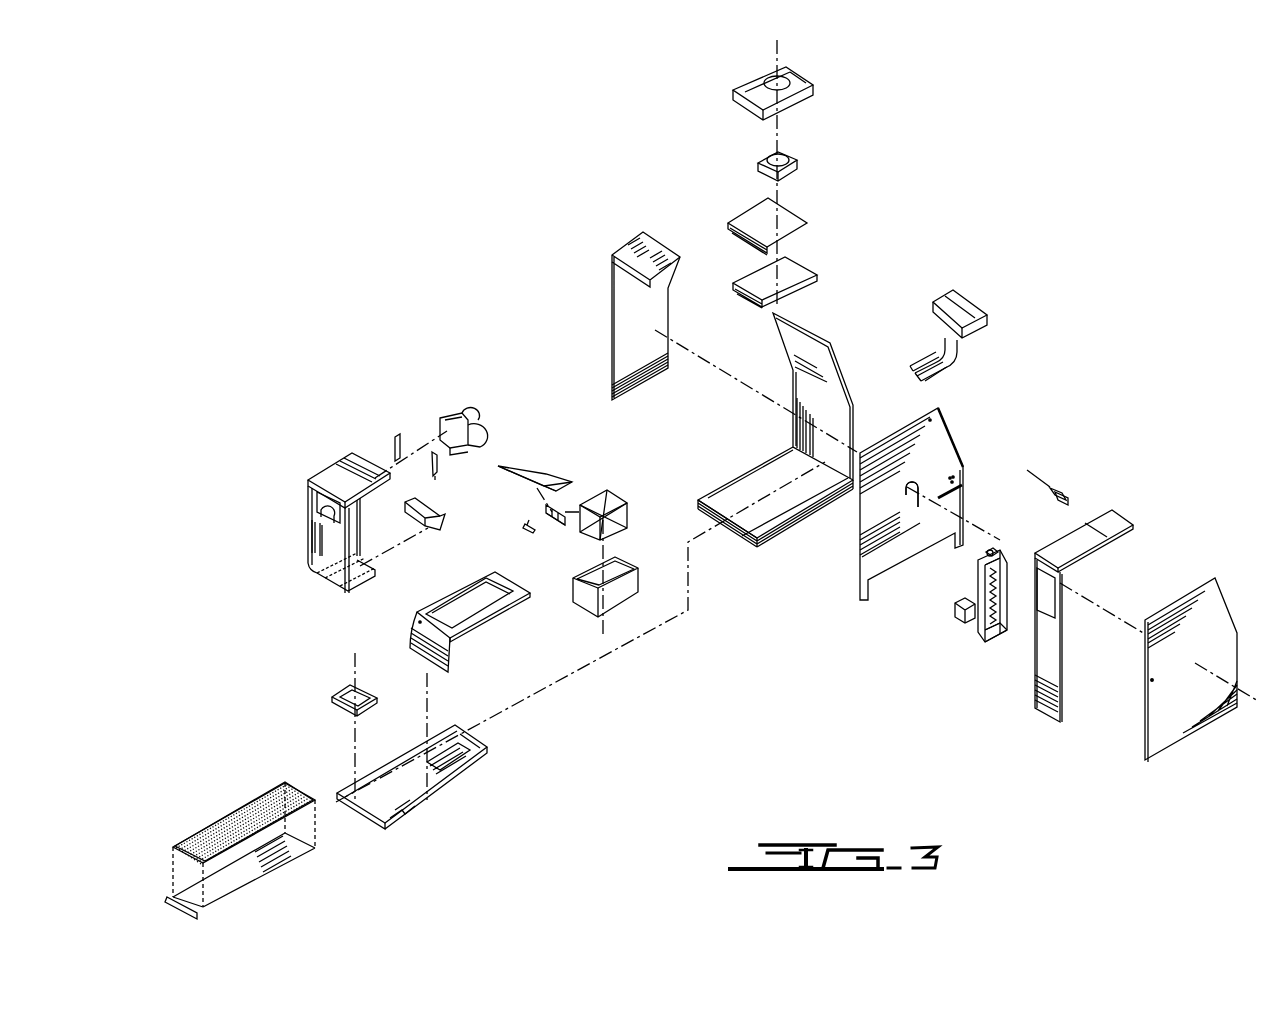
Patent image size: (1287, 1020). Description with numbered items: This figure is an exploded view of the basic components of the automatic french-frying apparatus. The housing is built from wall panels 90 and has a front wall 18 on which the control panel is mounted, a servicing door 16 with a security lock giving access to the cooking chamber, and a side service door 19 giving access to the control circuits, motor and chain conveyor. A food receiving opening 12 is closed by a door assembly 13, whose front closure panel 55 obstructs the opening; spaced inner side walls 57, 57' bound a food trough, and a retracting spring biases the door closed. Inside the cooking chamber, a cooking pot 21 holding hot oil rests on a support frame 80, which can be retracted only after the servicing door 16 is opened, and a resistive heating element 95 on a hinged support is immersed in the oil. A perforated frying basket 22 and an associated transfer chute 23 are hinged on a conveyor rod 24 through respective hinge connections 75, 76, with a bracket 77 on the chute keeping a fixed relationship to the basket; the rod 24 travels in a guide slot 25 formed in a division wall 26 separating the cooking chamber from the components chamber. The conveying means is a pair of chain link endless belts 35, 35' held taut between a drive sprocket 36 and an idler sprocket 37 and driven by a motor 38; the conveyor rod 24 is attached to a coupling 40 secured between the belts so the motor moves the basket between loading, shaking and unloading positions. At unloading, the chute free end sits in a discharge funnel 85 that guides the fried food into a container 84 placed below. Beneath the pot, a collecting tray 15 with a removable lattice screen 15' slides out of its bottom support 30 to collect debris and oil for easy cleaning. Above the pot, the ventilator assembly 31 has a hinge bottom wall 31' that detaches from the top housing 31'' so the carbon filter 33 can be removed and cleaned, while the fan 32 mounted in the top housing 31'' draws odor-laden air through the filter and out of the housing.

The food receiving opening 12 is at (334, 520).
The door assembly 13 is at (443, 428).
The collecting tray 15 is at (240, 864).
The lattice screen 15' is at (244, 792).
The servicing door 16 is at (310, 522).
The front wall 18 is at (1035, 696).
The side service door 19 is at (1162, 675).
The cooking pot 21 is at (587, 606).
The perforated frying basket 22 is at (612, 495).
The transfer chute 23 is at (530, 468).
The conveyor rod 24 is at (1046, 484).
The guide slot 25 is at (917, 497).
The division wall 26 is at (933, 473).
The bottom support 30 is at (396, 820).
The ventilator assembly 31 is at (706, 156).
The hinge bottom wall 31' is at (808, 283).
The top housing 31'' is at (806, 100).
The fan 32 is at (795, 162).
The carbon filter 33 is at (800, 220).
The chain link endless belt 35 is at (1016, 578).
The chain link endless belt 35' is at (956, 576).
The drive sprocket 36 is at (1002, 640).
The idler sprocket 37 is at (990, 552).
The motor 38 is at (955, 608).
The coupling 40 is at (1068, 496).
The front closure panel 55 is at (448, 442).
The inner side wall 57 is at (465, 460).
The inner side wall 57' is at (506, 402).
The hinge connection 75 is at (562, 512).
The hinge connection 76 is at (547, 522).
The bracket 77 is at (527, 529).
The support frame 80 is at (481, 624).
The container 84 is at (340, 694).
The discharge funnel 85 is at (420, 531).
The wall panels 90 is at (636, 322).
The resistive heating element 95 is at (960, 342).